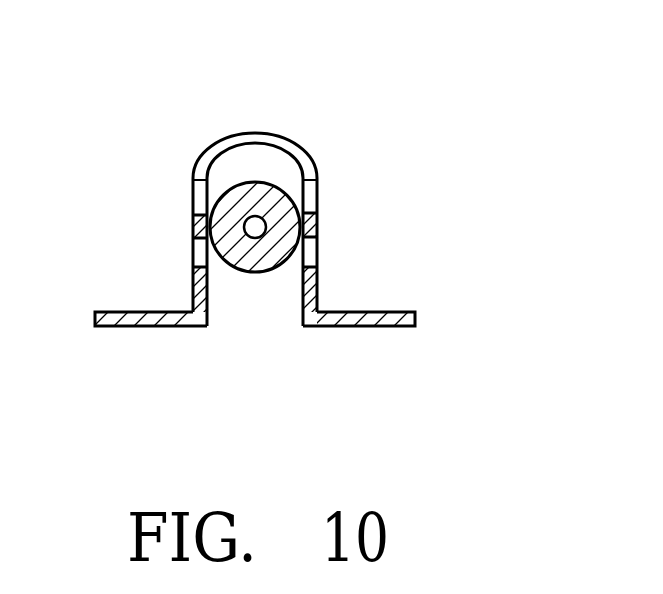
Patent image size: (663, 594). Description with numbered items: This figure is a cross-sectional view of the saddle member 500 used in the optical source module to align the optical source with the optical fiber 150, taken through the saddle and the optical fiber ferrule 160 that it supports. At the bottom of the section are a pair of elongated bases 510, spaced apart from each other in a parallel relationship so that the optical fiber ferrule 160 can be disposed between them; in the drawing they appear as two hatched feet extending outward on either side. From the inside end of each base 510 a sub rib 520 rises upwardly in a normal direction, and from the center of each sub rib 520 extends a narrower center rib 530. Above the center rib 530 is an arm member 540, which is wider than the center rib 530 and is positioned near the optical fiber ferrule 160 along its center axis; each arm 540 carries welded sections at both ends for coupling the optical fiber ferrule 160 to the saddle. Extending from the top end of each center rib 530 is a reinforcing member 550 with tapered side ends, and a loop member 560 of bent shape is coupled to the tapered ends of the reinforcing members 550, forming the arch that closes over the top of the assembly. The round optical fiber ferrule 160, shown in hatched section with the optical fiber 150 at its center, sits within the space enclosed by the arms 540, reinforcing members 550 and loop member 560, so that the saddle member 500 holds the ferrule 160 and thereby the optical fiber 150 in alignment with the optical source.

The saddle member 500 is at (203, 128).
The loop member 560 is at (303, 147).
The reinforcing member 550 is at (200, 195).
The arm member 540 is at (308, 230).
The center rib 530 is at (309, 254).
The sub rib 520 is at (200, 290).
The elongated base 510 is at (113, 320).
The optical fiber 150 is at (268, 227).
The optical fiber ferrule 160 is at (250, 262).